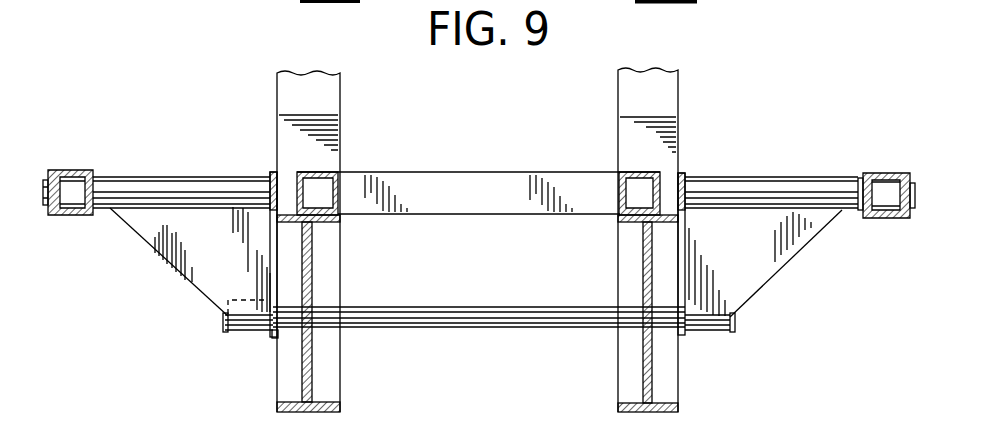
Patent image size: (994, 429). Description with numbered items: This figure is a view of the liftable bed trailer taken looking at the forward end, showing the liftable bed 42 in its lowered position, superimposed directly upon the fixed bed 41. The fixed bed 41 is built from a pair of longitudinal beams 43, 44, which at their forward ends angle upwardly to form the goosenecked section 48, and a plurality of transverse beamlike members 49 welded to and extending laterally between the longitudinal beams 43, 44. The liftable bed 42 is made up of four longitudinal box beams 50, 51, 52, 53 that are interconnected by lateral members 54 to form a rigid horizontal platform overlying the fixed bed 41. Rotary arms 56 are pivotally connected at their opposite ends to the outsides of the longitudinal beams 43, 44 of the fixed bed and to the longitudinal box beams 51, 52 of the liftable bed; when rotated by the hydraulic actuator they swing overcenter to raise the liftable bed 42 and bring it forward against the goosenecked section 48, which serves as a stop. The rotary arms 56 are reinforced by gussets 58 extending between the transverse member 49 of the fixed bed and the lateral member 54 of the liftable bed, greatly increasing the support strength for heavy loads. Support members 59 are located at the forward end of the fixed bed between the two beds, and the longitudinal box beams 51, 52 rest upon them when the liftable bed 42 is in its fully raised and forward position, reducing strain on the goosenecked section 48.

The fixed bed 41 is at (245, 380).
The liftable bed 42 is at (457, 132).
The longitudinal beam 43 is at (332, 355).
The longitudinal beam 44 is at (627, 352).
The goosenecked section 48 is at (290, 83).
The transverse beamlike member 49 is at (438, 307).
The longitudinal box beam 50 is at (72, 170).
The longitudinal box beam 51 is at (322, 172).
The longitudinal box beam 52 is at (645, 172).
The longitudinal box beam 53 is at (880, 175).
The lateral member 54 is at (205, 185).
The rotary arm 56 is at (273, 267).
The gusset 58 is at (215, 254).
The support member 59 is at (326, 119).